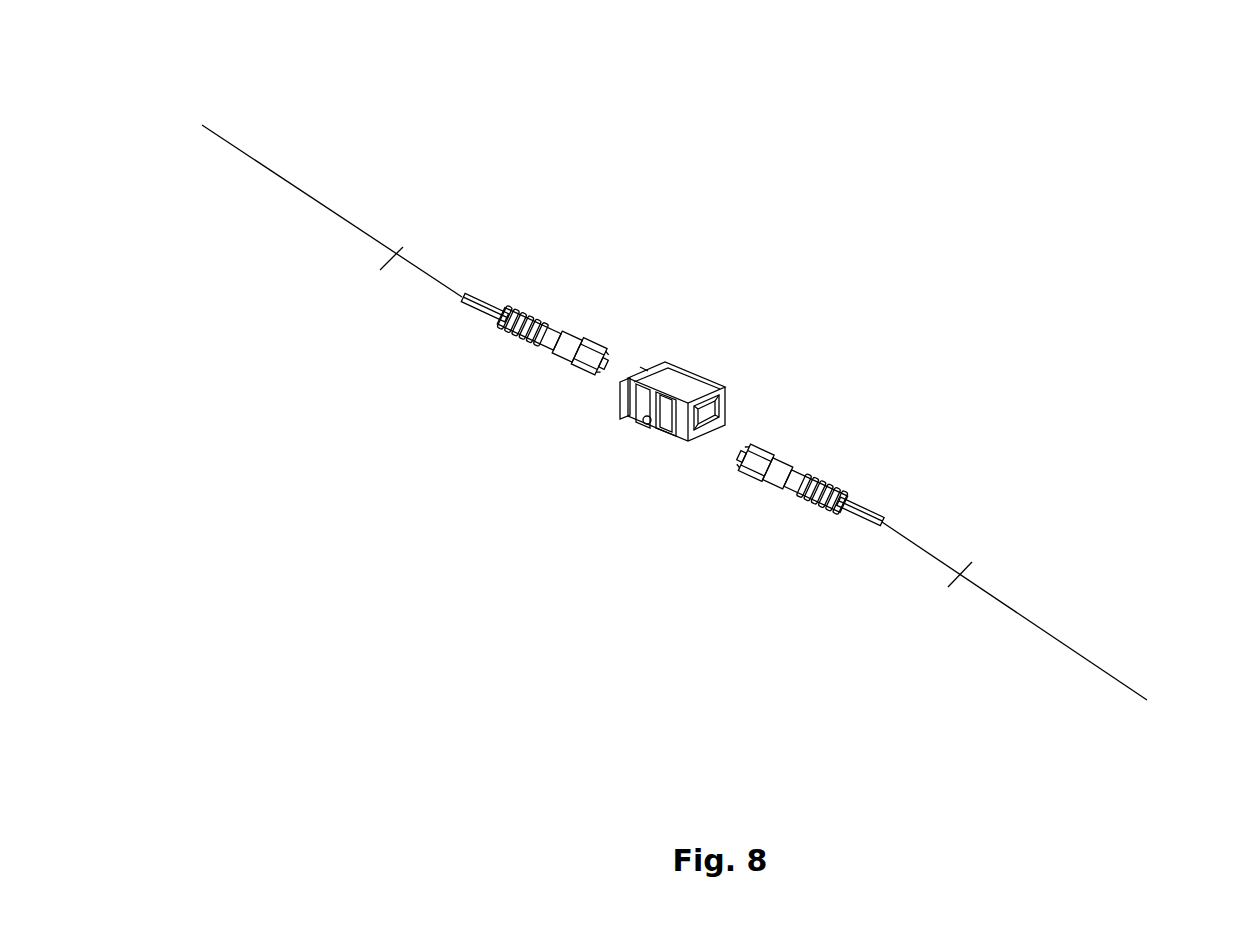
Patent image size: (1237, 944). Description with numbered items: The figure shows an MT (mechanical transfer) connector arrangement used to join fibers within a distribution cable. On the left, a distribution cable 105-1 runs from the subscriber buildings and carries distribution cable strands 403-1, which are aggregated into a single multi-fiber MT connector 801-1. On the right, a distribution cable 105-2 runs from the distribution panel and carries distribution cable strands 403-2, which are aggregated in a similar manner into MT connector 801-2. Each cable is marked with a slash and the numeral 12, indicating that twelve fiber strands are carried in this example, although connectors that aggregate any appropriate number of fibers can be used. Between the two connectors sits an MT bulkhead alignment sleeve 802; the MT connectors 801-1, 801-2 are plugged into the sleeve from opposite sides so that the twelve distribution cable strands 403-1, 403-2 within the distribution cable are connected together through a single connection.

The distribution cable 105-1 is at (310, 198).
The distribution cable 105-2 is at (1037, 628).
The distribution cable strands 403-1 is at (397, 205).
The distribution cable strands 403-2 is at (968, 528).
The number of distribution cable strands 12 is at (677, 405).
The MT connector 801-1 is at (540, 360).
The MT connector 801-2 is at (740, 465).
The MT bulkhead alignment sleeve 802 is at (697, 370).